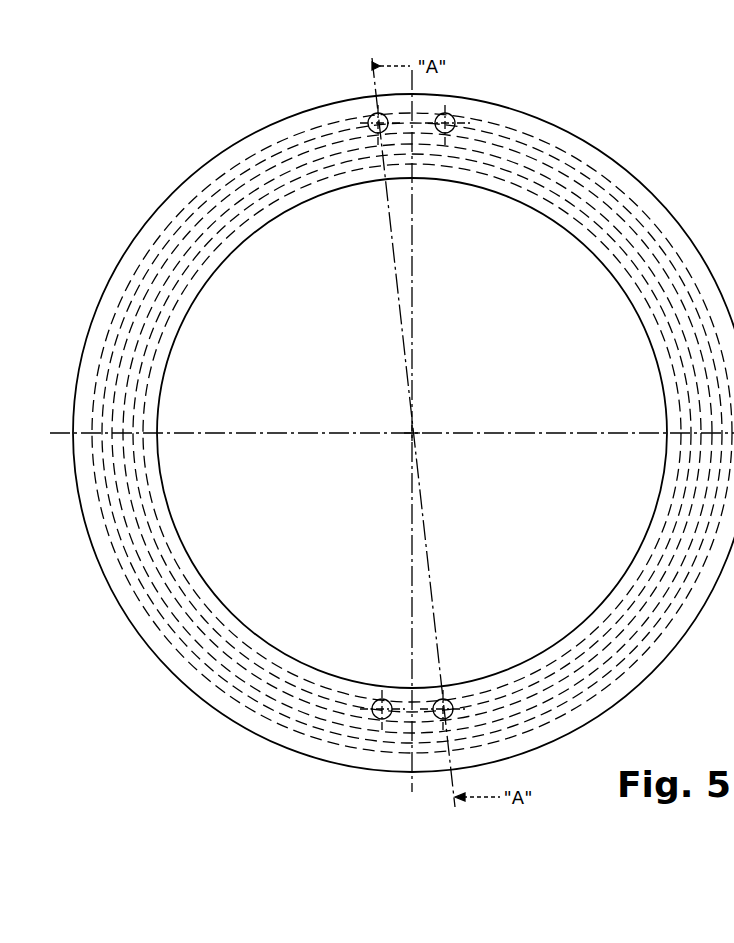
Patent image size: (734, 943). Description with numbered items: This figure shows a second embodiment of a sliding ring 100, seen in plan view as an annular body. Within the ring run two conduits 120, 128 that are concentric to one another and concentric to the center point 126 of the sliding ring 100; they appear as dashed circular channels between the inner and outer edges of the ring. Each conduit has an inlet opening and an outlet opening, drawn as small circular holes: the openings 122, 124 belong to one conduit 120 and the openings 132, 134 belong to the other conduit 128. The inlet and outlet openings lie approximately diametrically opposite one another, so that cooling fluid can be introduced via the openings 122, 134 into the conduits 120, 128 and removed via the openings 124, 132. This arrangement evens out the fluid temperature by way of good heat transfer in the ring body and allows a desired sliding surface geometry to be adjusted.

The sliding ring 100 is at (197, 124).
The conduit 120 is at (594, 229).
The inlet opening 122 is at (380, 698).
The outlet opening 124 is at (447, 698).
The center point 126 is at (415, 430).
The conduit 128 is at (567, 150).
The outlet opening 132 is at (369, 118).
The inlet opening 134 is at (455, 120).